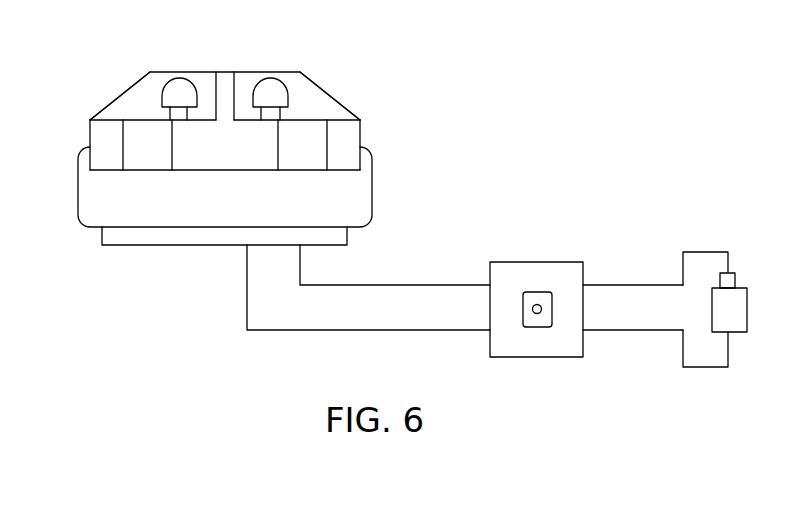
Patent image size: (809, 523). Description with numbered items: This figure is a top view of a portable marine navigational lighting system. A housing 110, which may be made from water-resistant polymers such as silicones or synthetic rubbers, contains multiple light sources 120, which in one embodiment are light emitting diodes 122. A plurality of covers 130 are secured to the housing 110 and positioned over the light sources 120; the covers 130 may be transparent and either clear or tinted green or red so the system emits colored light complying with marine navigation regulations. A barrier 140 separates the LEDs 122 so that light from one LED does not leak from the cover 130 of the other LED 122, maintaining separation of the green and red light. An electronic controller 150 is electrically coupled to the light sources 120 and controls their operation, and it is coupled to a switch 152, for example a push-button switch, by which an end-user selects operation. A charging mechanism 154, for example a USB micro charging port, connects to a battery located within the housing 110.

The housing 110 is at (382, 192).
The light sources 120 is at (156, 89).
The light emitting diodes 122 is at (160, 104).
The covers 130 is at (163, 72).
The barrier 140 is at (225, 72).
The electronic controller 150 is at (483, 341).
The switch 152 is at (534, 292).
The charging mechanism 154 is at (747, 312).